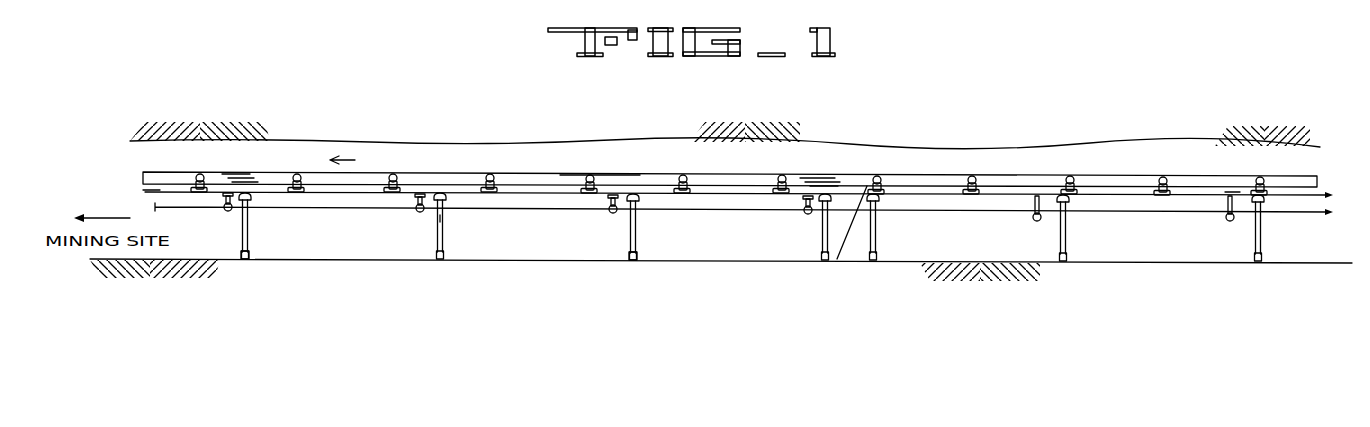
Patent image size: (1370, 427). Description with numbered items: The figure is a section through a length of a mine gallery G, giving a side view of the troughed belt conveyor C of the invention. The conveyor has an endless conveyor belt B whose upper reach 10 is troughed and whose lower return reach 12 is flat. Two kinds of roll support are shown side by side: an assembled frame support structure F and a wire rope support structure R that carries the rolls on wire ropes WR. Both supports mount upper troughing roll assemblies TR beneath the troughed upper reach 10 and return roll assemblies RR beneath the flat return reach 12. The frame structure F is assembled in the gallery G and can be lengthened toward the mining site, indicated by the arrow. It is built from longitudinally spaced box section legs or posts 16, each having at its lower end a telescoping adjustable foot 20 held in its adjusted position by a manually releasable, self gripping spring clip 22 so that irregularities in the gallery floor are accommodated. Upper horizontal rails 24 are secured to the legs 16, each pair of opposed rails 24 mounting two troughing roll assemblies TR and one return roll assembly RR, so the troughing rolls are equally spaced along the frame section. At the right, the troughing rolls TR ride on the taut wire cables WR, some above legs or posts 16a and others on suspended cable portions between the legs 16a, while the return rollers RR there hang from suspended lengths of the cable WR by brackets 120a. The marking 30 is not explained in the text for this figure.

The upper reach 10 is at (810, 174).
The lower return reach 12 is at (918, 215).
The legs or posts 16 is at (248, 217).
The legs or posts 16a is at (1262, 240).
The telescoping adjustable foot 20 is at (250, 257).
The self gripping spring clip 22 is at (640, 245).
The upper horizontal rails 24 is at (145, 192).
The drive section 30 is at (246, 184).
The brackets 120a is at (1232, 197).
The conveyor belt B is at (539, 168).
The troughed belt conveyor C is at (598, 160).
The frame support structure F is at (452, 218).
The mine gallery G is at (140, 147).
The wire rope support structure R is at (1076, 240).
The troughing roll assemblies TR is at (492, 174).
The return roll assemblies RR is at (418, 208).
The wire ropes WR is at (1127, 193).